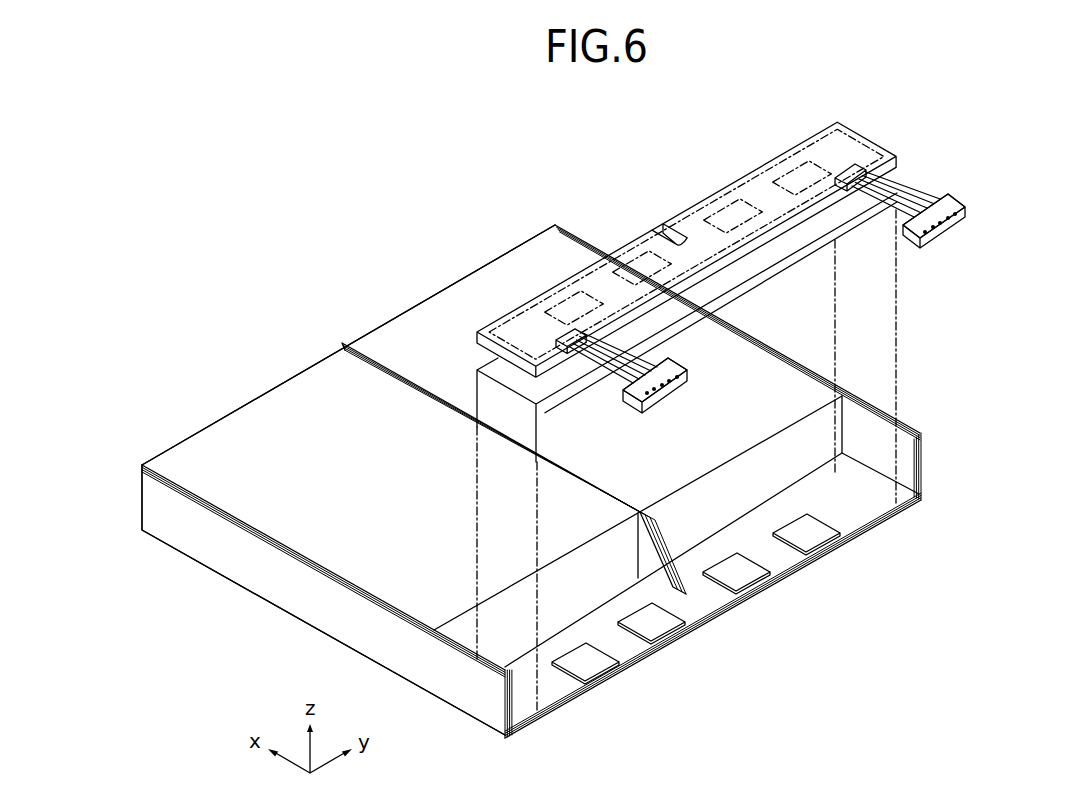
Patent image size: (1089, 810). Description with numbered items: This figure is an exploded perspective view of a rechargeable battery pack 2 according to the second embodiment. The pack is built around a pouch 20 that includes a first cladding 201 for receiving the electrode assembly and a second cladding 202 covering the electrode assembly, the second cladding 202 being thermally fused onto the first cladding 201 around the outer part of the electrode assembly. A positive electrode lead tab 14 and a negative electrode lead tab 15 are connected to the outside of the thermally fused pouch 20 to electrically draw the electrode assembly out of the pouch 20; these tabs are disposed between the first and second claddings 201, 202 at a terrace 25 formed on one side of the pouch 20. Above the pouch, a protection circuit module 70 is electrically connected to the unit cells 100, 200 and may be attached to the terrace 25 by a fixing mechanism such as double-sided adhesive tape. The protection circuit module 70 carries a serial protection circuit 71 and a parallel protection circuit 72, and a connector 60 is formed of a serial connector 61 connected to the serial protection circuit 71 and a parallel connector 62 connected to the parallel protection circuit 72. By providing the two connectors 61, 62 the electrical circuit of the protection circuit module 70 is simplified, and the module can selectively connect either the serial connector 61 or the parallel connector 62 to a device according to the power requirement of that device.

The rechargeable battery pack 2 is at (324, 175).
The unit cell 100 is at (150, 560).
The pouch 20 is at (217, 672).
The first cladding 201 is at (316, 508).
The second cladding 202 is at (288, 587).
The terrace 25 is at (548, 690).
The positive electrode lead tab 14 is at (592, 670).
The negative electrode lead tab 15 is at (658, 628).
The unit cell 200 is at (760, 329).
The protection circuit module 70 is at (801, 128).
The serial protection circuit 71 is at (622, 246).
The parallel protection circuit 72 is at (753, 167).
The connector 60 is at (1007, 268).
The serial connector 61 is at (690, 398).
The parallel connector 62 is at (937, 233).